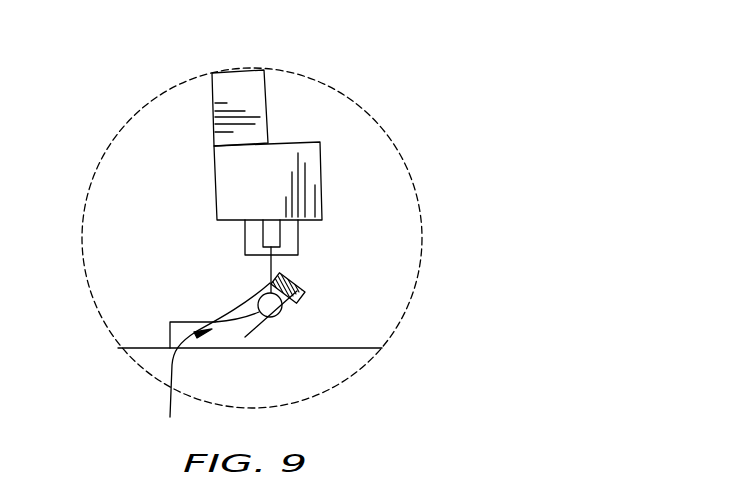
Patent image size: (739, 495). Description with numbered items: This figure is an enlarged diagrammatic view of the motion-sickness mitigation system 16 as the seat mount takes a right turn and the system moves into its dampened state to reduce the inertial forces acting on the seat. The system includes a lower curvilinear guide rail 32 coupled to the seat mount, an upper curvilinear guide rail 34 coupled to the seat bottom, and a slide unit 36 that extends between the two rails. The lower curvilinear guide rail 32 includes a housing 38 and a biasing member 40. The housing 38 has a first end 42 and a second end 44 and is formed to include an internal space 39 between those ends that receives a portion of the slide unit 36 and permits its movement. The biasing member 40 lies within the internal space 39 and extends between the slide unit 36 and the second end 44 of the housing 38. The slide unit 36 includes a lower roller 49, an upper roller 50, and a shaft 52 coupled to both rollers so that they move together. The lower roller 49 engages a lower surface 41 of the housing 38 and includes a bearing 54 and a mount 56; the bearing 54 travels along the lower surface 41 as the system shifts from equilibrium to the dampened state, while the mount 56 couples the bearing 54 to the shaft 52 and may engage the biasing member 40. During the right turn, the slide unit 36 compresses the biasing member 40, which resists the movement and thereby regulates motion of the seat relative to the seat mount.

The motion-sickness mitigation system 16 is at (406, 94).
The lower curvilinear guide rail 32 is at (358, 289).
The upper curvilinear guide rail 34 is at (212, 235).
The slide unit 36 is at (176, 270).
The housing 38 is at (247, 338).
The internal space 39 is at (214, 363).
The biasing member 40 is at (320, 305).
The lower surface 41 is at (239, 336).
The first end 42 is at (168, 327).
The second end 44 is at (283, 283).
The lower roller 49 is at (258, 308).
The upper roller 50 is at (263, 235).
The shaft 52 is at (268, 268).
The bearing 54 is at (281, 313).
The mount 56 is at (288, 264).